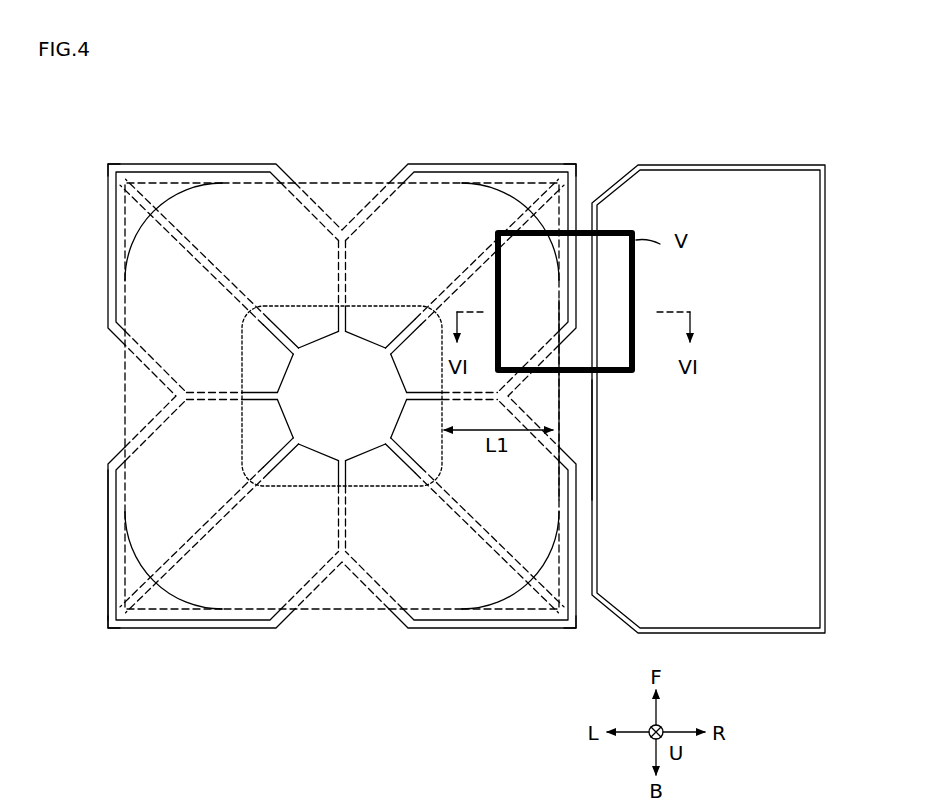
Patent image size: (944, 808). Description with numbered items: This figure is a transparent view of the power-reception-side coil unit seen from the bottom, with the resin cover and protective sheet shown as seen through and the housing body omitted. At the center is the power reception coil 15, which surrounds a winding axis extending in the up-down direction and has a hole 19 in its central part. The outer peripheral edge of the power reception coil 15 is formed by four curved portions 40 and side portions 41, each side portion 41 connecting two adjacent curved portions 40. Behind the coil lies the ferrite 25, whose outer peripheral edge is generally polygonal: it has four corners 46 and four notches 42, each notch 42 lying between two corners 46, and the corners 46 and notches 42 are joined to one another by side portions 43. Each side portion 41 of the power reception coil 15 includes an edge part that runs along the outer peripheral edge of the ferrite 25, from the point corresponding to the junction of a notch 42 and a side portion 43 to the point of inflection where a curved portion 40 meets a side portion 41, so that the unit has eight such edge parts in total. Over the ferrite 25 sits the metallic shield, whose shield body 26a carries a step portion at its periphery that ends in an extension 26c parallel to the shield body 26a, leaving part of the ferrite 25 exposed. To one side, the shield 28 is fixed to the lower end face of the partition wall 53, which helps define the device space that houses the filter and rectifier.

The power reception coil 15 is at (358, 182).
The hole 19 is at (244, 348).
The ferrite 25 is at (223, 171).
The shield body 26a is at (167, 182).
The extension 26c is at (128, 170).
The shield 28 is at (770, 190).
The curved portion 40 is at (511, 190).
The side portion 41 is at (563, 404).
The notch 42 is at (340, 220).
The side portion 43 is at (112, 559).
The corner 46 is at (106, 161).
The partition wall 53 is at (598, 441).